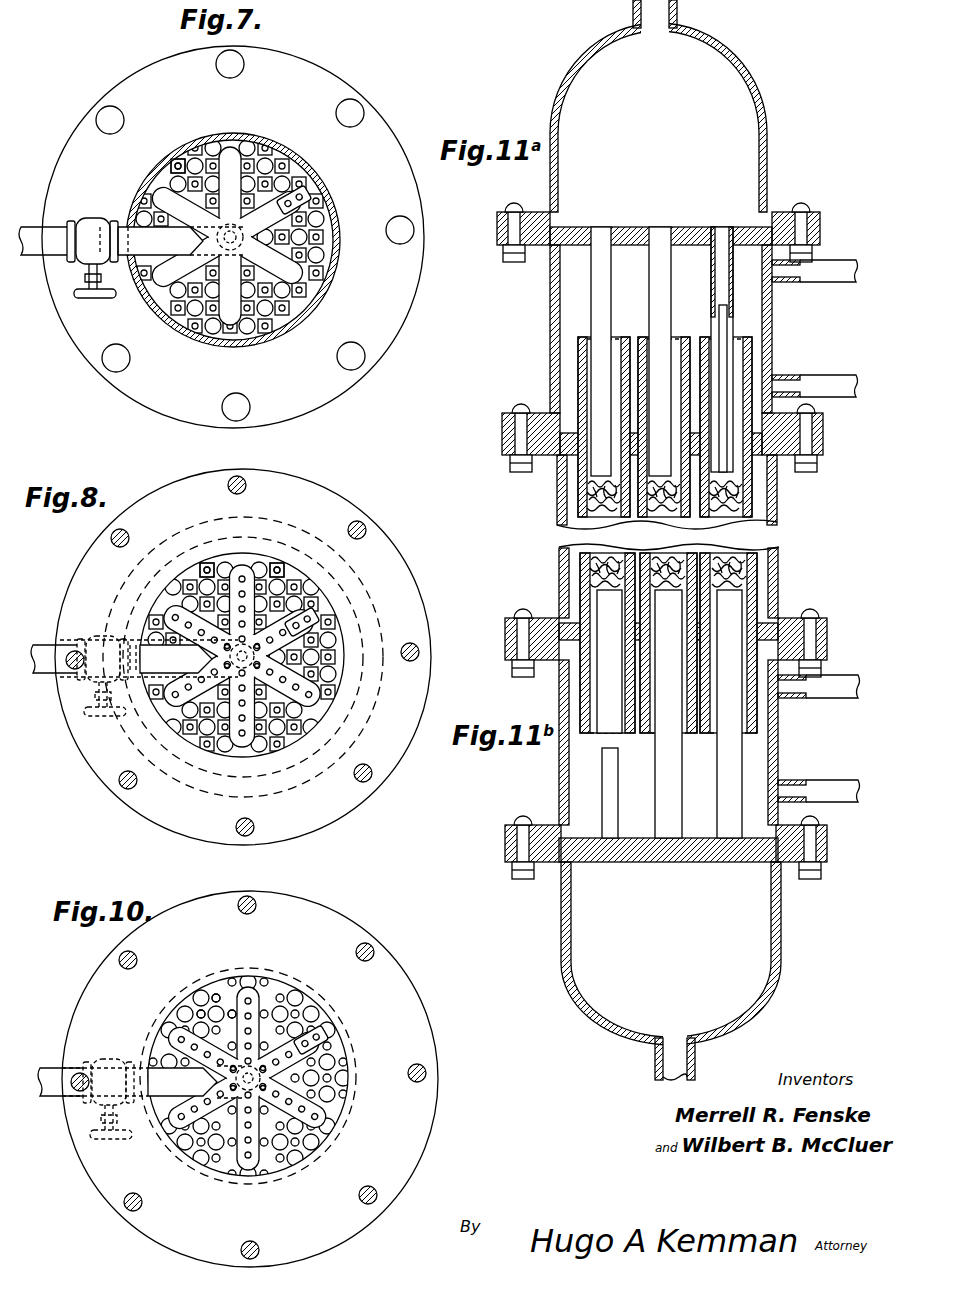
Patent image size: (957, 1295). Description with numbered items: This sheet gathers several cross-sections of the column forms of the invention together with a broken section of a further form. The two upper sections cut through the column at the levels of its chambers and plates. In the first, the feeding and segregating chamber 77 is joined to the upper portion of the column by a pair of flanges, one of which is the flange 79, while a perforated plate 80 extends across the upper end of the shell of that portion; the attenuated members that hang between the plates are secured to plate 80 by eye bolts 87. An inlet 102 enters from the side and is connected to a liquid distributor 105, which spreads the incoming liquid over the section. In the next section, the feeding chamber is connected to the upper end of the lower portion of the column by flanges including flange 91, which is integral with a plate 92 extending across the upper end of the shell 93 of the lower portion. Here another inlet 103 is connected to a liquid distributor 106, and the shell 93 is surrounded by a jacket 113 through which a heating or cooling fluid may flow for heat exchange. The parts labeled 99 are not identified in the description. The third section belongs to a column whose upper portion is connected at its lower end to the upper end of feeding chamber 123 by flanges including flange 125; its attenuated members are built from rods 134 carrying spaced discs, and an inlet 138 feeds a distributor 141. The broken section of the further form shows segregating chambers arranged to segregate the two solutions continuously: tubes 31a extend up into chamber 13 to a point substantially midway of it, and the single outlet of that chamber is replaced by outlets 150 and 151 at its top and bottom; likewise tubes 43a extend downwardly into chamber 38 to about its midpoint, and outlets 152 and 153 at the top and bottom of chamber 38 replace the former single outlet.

In FIG. 7, the flange 79 is at (300, 82).
In FIG. 7, the perforated plate 80 is at (293, 297).
In FIG. 7, the eye bolts 87 is at (175, 160).
In FIG. 7, the feeding and segregating chamber 77 is at (305, 165).
In FIG. 7, the liquid distributor 105 is at (297, 273).
In FIG. 7, the inlet 102 is at (41, 252).
In FIG. 8, the flange 91 is at (328, 812).
In FIG. 8, the shell 93 is at (190, 753).
In FIG. 8, the tubes 99 is at (288, 558).
In FIG. 8, the plate 92 is at (322, 604).
In FIG. 8, the liquid distributor 106 is at (322, 702).
In FIG. 8, the inlet 103 is at (45, 670).
In FIG. 8, the jacket 113 is at (112, 722).
In FIG. 10, the flange 125 is at (405, 1056).
In FIG. 10, the rod 134 is at (230, 1008).
In FIG. 10, the distributor 141 is at (250, 1168).
In FIG. 10, the feeding chamber 123 is at (343, 1052).
In FIG. 10, the inlet 138 is at (96, 1104).
In FIG. 11A, the chamber 13 is at (573, 312).
In FIG. 11A, the tubes 31a is at (714, 328).
In FIG. 11A, the outlet 150 is at (838, 280).
In FIG. 11A, the outlet 151 is at (857, 385).
In FIG. 11B, the chamber 38 is at (758, 768).
In FIG. 11B, the tubes 43a is at (696, 735).
In FIG. 11B, the outlet 152 is at (845, 699).
In FIG. 11B, the outlet 153 is at (848, 798).